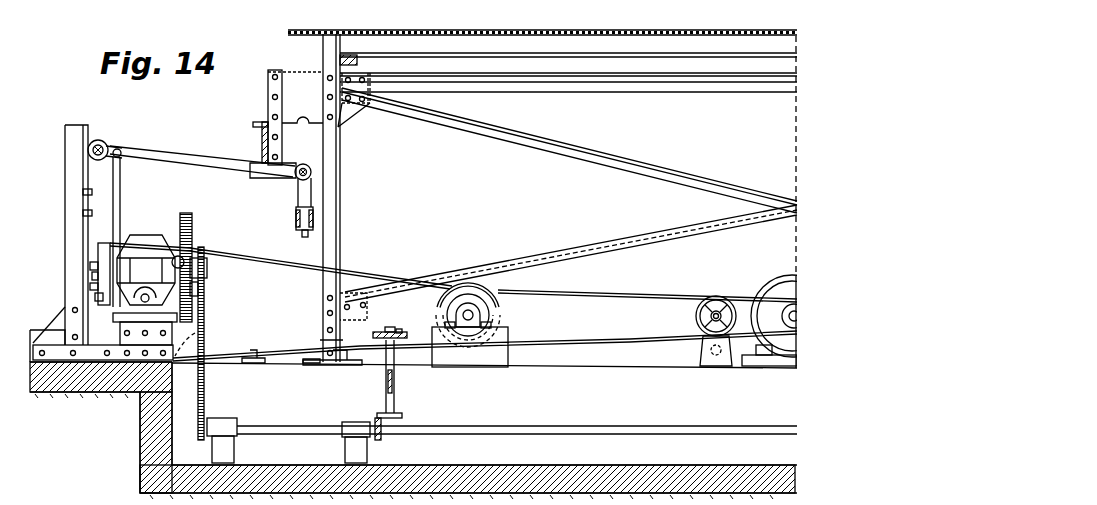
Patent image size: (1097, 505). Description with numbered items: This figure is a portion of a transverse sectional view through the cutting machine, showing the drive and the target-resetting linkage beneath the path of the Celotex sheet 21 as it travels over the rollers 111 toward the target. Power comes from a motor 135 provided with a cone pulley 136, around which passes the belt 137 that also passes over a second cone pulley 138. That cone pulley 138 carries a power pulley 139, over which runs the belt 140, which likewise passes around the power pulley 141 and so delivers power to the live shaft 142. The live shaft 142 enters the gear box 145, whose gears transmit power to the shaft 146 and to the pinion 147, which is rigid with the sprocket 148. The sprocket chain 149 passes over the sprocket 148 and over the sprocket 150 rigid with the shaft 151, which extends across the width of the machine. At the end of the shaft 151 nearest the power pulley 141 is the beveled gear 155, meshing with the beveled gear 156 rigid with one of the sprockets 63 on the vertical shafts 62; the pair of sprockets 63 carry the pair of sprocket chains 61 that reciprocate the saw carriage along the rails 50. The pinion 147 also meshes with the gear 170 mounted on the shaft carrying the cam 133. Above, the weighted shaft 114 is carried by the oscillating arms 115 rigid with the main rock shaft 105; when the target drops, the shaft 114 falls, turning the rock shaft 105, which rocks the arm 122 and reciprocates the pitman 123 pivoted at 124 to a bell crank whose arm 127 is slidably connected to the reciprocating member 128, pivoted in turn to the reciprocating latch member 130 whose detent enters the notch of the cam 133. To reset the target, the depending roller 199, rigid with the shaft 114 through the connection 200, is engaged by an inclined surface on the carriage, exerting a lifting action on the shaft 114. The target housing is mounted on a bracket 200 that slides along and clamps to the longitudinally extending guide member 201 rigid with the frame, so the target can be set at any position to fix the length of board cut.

The Celotex sheet 21 is at (298, 32).
The rollers 111 is at (566, 47).
The guide member 201 is at (253, 124).
The oscillating arms 115 is at (238, 150).
The shaft 114 is at (305, 165).
The connection 200 is at (301, 195).
The depending roller 199 is at (301, 234).
The main rock shaft 105 is at (100, 141).
The arm 122 is at (117, 149).
The pitman 123 is at (121, 175).
The cam 133 is at (107, 237).
The arm of bell crank 127 is at (97, 275).
The reciprocating member 128 is at (97, 283).
The reciprocating latch member 130 is at (97, 293).
The pivot 124 is at (100, 303).
The gear box 145 is at (132, 243).
The shaft 146 is at (175, 252).
The live shaft 142 is at (142, 295).
The gear 170 is at (189, 207).
The sprocket 148 is at (205, 255).
The pinion 147 is at (199, 289).
The sprocket chain 149 is at (205, 320).
The power pulley 141 is at (198, 335).
The rails 50 is at (245, 352).
The sprocket 150 is at (212, 420).
The shaft 151 is at (134, 431).
The sprocket chains 61 is at (373, 333).
The vertical shafts 62 is at (394, 328).
The sprocket wheels 63 is at (401, 336).
The beveled gear 156 is at (398, 418).
The beveled gear 155 is at (381, 442).
The power pulley 139 is at (454, 312).
The cone pulley 138 is at (499, 312).
The belt 140 is at (352, 280).
The belt 137 is at (636, 296).
The cone pulley 136 is at (776, 282).
The motor 135 is at (779, 280).